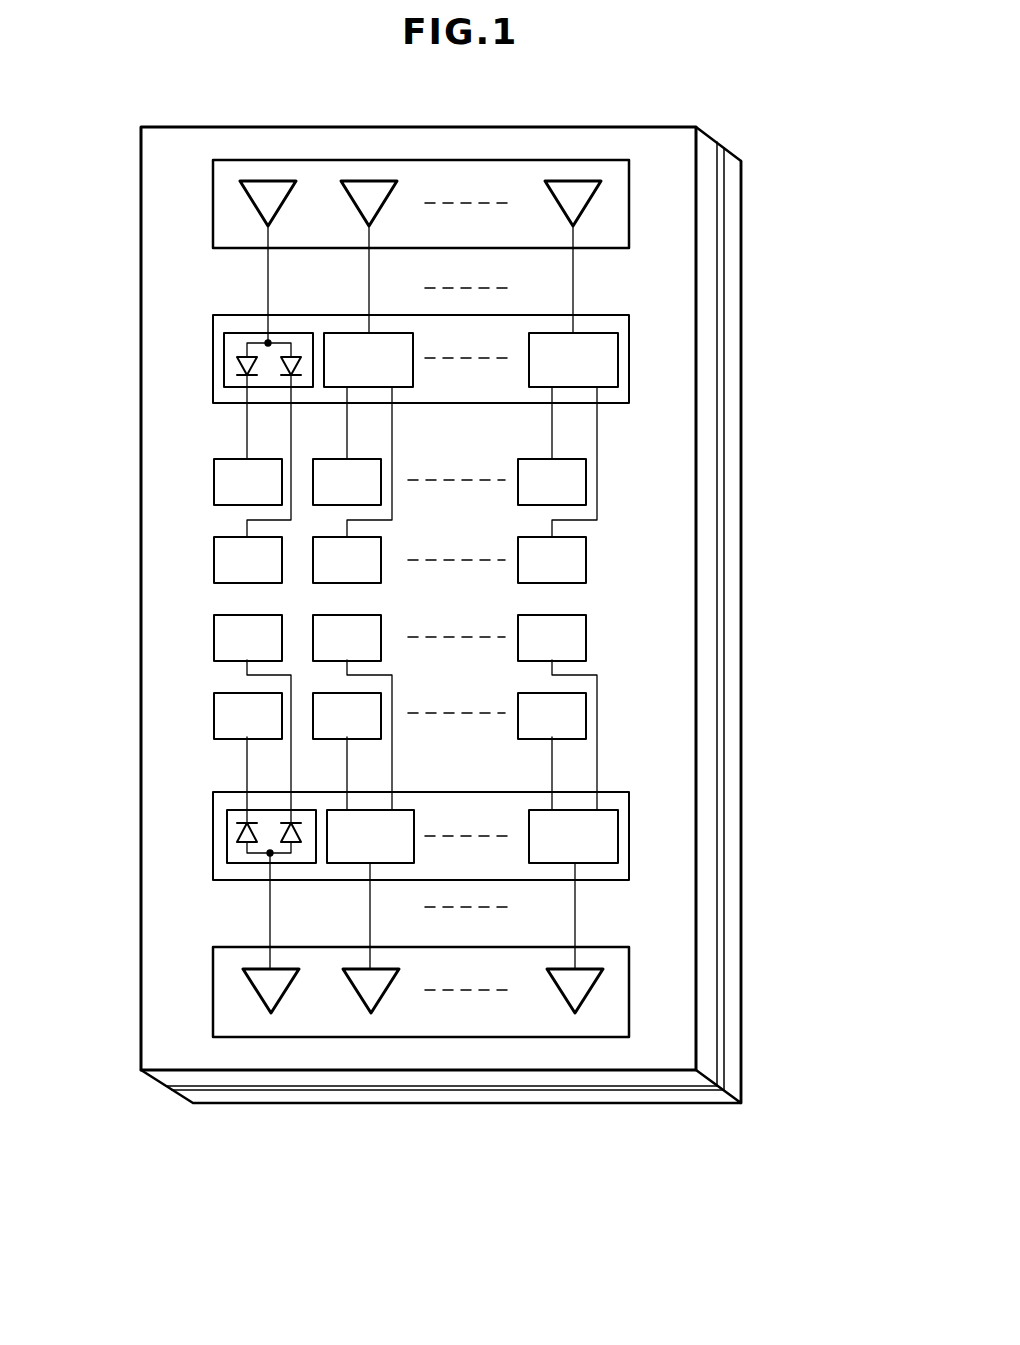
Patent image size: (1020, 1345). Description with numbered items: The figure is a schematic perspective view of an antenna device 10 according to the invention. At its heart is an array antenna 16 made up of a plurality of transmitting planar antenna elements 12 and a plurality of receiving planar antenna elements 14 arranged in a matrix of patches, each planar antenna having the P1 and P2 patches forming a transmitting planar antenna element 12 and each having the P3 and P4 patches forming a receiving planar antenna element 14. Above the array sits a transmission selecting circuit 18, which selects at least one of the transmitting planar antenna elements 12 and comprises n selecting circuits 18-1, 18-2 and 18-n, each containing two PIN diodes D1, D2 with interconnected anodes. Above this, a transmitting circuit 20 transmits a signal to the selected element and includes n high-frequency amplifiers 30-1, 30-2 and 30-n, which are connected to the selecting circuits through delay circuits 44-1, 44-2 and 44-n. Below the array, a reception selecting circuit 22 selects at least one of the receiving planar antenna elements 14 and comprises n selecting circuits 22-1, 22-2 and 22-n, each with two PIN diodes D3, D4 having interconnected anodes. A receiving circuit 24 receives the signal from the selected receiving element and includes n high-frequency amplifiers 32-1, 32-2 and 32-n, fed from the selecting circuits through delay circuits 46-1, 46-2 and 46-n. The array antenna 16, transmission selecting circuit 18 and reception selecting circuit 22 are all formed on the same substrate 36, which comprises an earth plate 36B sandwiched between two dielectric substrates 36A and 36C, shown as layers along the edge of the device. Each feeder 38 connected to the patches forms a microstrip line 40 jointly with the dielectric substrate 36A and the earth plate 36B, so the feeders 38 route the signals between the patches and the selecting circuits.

The antenna device 10 is at (467, 110).
The transmitting planar antenna element 12 is at (208, 513).
The receiving planar antenna element 14 is at (210, 683).
The array antenna 16 is at (78, 532).
The transmission selecting circuit 18 is at (630, 367).
The transmitting circuit 18-1 is at (204, 324).
The transmitting circuit 18-2 is at (413, 350).
The transmitting circuit 18-n is at (528, 368).
The transmitting circuit 20 is at (630, 212).
The reception selecting circuit 22 is at (630, 838).
The receiving circuit 22-1 is at (203, 864).
The receiving circuit 22-2 is at (404, 810).
The receiving circuit 22-n is at (529, 845).
The receiving circuit 24 is at (630, 1010).
The high-frequency amplifier 30-1 is at (267, 181).
The high-frequency amplifier 30-2 is at (369, 181).
The high-frequency amplifier 30-n is at (573, 181).
The high-frequency amplifier 32-1 is at (258, 995).
The high-frequency amplifier 32-2 is at (358, 995).
The high-frequency amplifier 32-n is at (562, 995).
The substrate 36 is at (521, 615).
The dielectric substrate 36A is at (705, 197).
The earth plate 36B is at (720, 247).
The dielectric substrate 36C is at (843, 150).
The feeder 38 is at (247, 445).
The microstrip line 40 is at (612, 444).
The delay circuit 44-1 is at (268, 272).
The delay circuit 44-2 is at (369, 288).
The delay circuit 44-n is at (573, 288).
The delay circuit 46-1 is at (270, 907).
The delay circuit 46-2 is at (371, 915).
The delay circuit 46-n is at (575, 925).
The PIN diode D1 is at (242, 356).
The PIN diode D2 is at (293, 356).
The PIN diode D3 is at (300, 845).
The PIN diode D4 is at (240, 838).